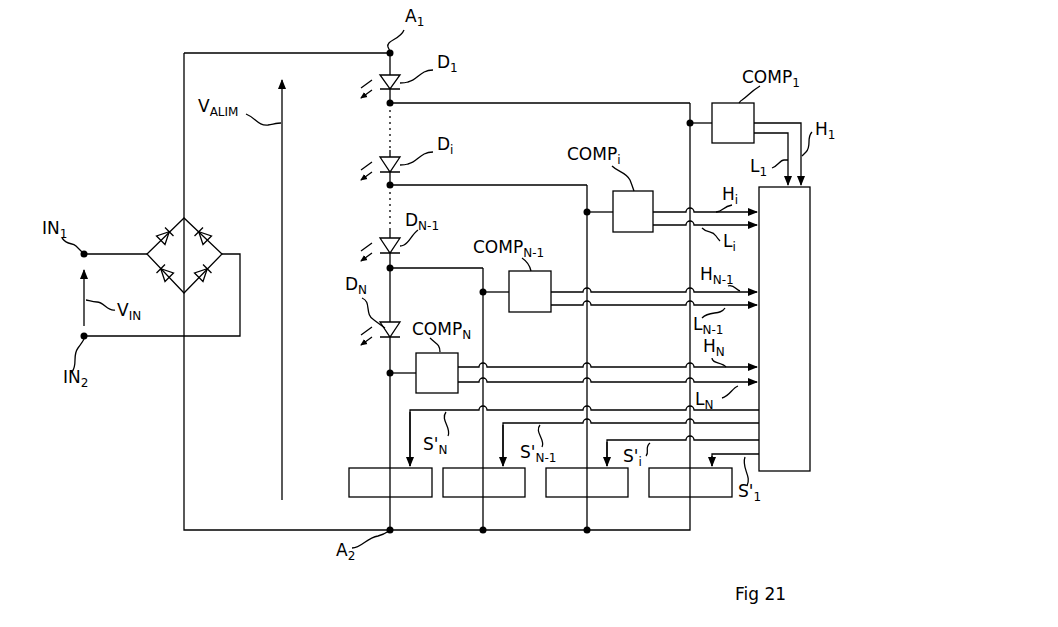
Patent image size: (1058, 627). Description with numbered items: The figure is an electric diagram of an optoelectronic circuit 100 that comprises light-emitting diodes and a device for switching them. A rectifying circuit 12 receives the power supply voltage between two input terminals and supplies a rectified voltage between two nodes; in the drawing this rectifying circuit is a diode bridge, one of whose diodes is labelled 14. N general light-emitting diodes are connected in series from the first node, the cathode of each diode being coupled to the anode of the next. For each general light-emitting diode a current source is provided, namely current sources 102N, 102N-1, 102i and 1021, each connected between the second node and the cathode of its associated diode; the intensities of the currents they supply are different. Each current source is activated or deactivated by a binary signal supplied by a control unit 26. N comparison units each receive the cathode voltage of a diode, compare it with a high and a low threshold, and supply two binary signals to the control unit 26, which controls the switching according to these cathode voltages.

The optoelectronic circuit 100 is at (641, 41).
The rectifying circuit 12 is at (181, 232).
The rectifier diode 14 is at (168, 233).
The control unit 26 is at (779, 471).
The current source 102N is at (410, 497).
The current source 102N-1 is at (502, 497).
The current source 102i is at (604, 497).
The current source 1021 is at (702, 497).